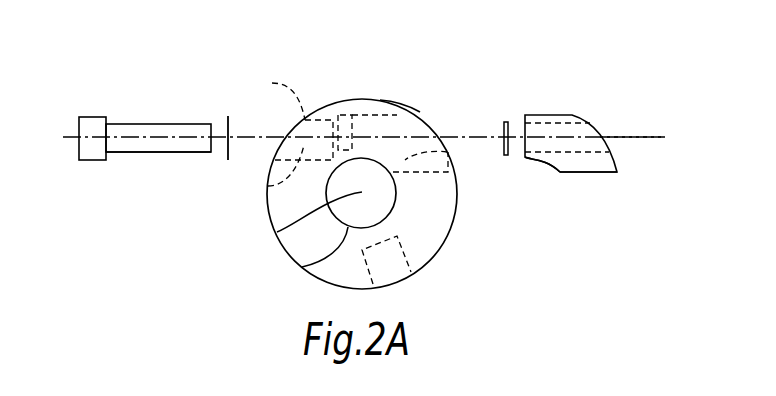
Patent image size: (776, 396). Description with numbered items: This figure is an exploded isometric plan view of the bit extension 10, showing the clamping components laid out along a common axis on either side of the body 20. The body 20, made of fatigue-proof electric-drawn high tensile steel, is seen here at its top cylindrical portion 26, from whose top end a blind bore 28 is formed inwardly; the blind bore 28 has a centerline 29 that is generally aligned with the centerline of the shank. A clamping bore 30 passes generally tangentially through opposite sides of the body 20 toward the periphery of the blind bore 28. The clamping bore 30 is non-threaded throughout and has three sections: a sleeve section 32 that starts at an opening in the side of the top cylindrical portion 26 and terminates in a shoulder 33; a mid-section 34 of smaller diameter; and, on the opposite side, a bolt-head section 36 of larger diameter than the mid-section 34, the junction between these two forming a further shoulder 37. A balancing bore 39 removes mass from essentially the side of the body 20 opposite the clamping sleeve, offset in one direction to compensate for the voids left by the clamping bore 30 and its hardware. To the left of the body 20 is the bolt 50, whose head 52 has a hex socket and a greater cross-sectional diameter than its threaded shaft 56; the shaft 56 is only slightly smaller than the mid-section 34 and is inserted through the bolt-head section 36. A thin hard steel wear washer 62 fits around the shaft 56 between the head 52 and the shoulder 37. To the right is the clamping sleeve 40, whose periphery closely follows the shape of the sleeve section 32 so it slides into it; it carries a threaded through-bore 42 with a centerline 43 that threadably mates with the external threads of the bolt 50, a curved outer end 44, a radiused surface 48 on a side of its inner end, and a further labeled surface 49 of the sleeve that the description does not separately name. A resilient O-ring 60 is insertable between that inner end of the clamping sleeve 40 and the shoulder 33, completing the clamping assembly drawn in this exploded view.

The bit extension 10 is at (288, 53).
The body 20 is at (462, 211).
The top cylindrical portion 26 is at (402, 107).
The blind bore 28 is at (302, 267).
The centerline 29 is at (277, 232).
The clamping bore 30 is at (447, 152).
The sleeve section 32 is at (414, 133).
The shoulder 33 is at (386, 101).
The mid-section 34 is at (338, 115).
The bolt-head section 36 is at (270, 186).
The shoulder 37 is at (273, 94).
The balancing bore 39 is at (398, 278).
The clamping sleeve 40 is at (572, 110).
The threaded through-bore 42 is at (619, 156).
The centerline 43 is at (660, 137).
The curved outer end 44 is at (598, 131).
The radiused surface 48 is at (548, 167).
The guide bottom surface 49 is at (590, 173).
The bolt 50 is at (163, 108).
The head 52 is at (93, 117).
The threaded shaft 56 is at (172, 153).
The O-ring 60 is at (507, 121).
The washer 62 is at (229, 123).